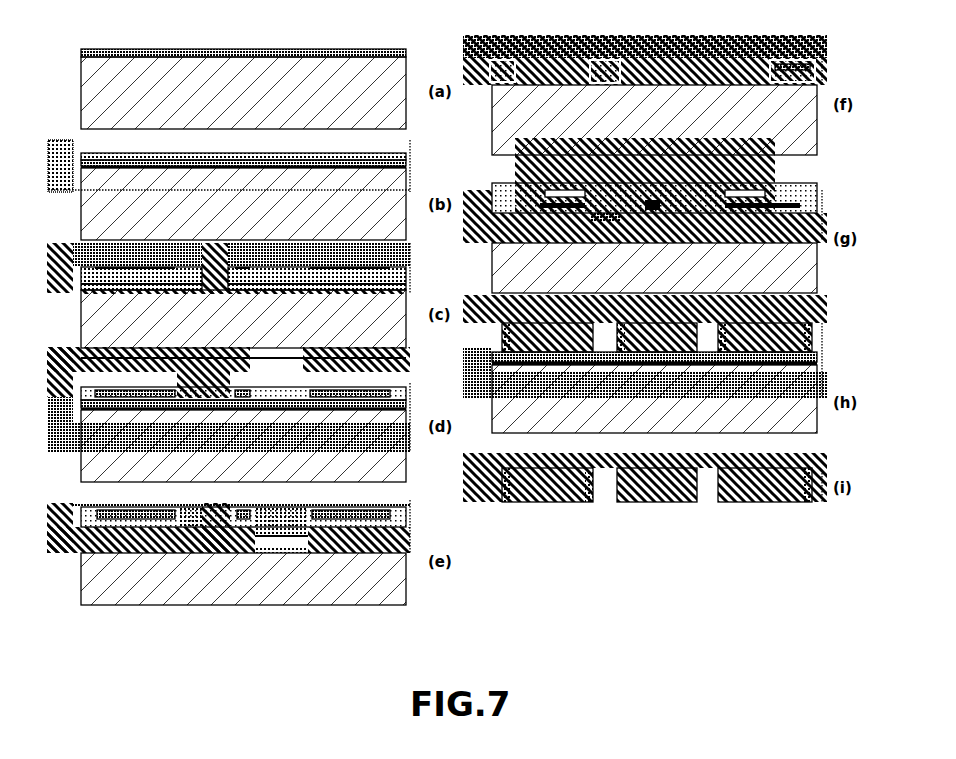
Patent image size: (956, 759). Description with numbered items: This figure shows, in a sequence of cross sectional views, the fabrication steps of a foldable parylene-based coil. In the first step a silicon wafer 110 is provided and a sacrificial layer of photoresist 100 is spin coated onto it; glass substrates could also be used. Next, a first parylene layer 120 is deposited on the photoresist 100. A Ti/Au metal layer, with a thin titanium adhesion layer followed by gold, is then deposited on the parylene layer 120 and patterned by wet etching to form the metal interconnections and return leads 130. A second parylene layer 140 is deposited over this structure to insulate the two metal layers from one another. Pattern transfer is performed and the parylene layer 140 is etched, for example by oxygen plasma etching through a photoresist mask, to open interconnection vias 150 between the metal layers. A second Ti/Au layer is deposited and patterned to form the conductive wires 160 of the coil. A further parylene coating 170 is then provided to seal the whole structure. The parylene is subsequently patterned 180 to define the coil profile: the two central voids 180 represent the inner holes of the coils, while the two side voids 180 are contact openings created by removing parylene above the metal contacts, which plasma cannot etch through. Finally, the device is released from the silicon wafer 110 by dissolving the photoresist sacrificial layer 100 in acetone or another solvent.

The sacrificial layer of photoresist 100 is at (136, 48).
The silicon wafer 110 is at (81, 87).
The first parylene layer 120 is at (294, 154).
The metal interconnections and return leads 130 is at (100, 270).
The second parylene layer 140 is at (211, 390).
The interconnection vias 150 is at (172, 511).
The conductive wires 160 is at (568, 45).
The further parylene coating 170 is at (689, 185).
The patterned parylene voids 180 is at (603, 330).